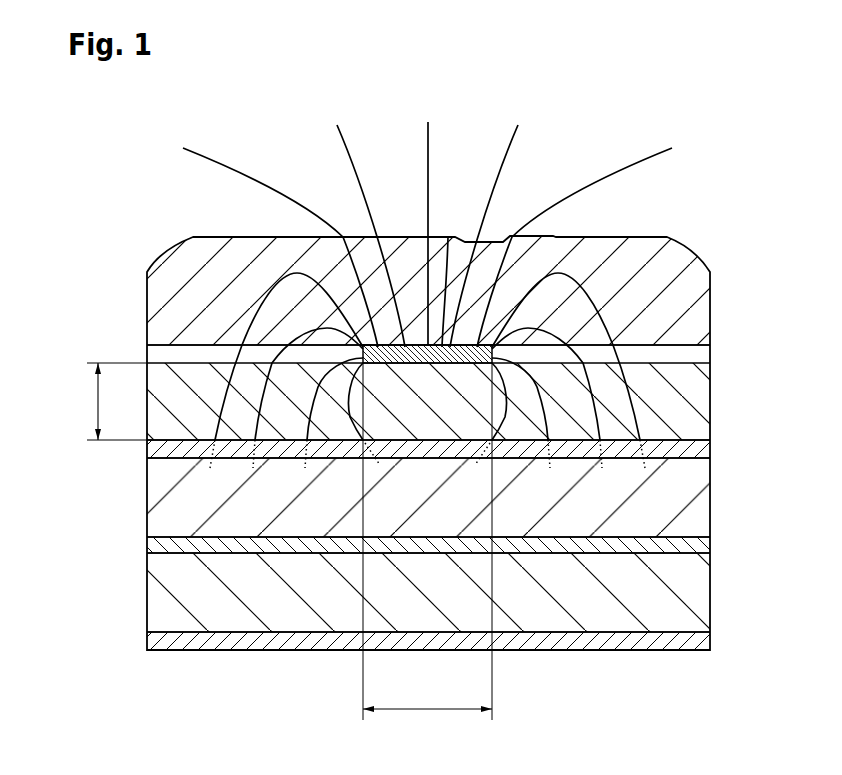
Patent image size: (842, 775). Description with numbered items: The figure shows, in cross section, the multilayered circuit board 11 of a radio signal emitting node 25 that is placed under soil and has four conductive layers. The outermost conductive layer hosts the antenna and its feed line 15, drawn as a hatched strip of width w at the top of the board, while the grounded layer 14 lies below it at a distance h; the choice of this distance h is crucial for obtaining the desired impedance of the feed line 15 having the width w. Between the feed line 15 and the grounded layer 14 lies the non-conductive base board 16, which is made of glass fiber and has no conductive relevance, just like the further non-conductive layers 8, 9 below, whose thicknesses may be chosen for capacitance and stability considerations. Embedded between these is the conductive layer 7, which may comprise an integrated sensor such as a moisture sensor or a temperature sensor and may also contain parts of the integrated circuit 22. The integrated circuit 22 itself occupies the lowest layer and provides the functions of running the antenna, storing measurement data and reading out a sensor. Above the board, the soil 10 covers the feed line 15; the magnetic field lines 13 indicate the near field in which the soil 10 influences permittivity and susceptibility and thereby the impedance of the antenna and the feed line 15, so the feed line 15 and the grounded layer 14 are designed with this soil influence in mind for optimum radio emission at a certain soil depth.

The conductive layer 7 is at (162, 548).
The non-conductive layer 8 is at (165, 492).
The non-conductive layer 9 is at (685, 585).
The soil 10 is at (690, 307).
The multilayered circuit board 11 is at (732, 497).
The magnetic field lines 13 is at (618, 172).
The grounded layer 14 is at (688, 449).
The feed line 15 is at (448, 237).
The non-conductive base board 16 is at (678, 399).
The integrated circuit 22 is at (695, 642).
The radio signal emitting node 25 is at (118, 343).